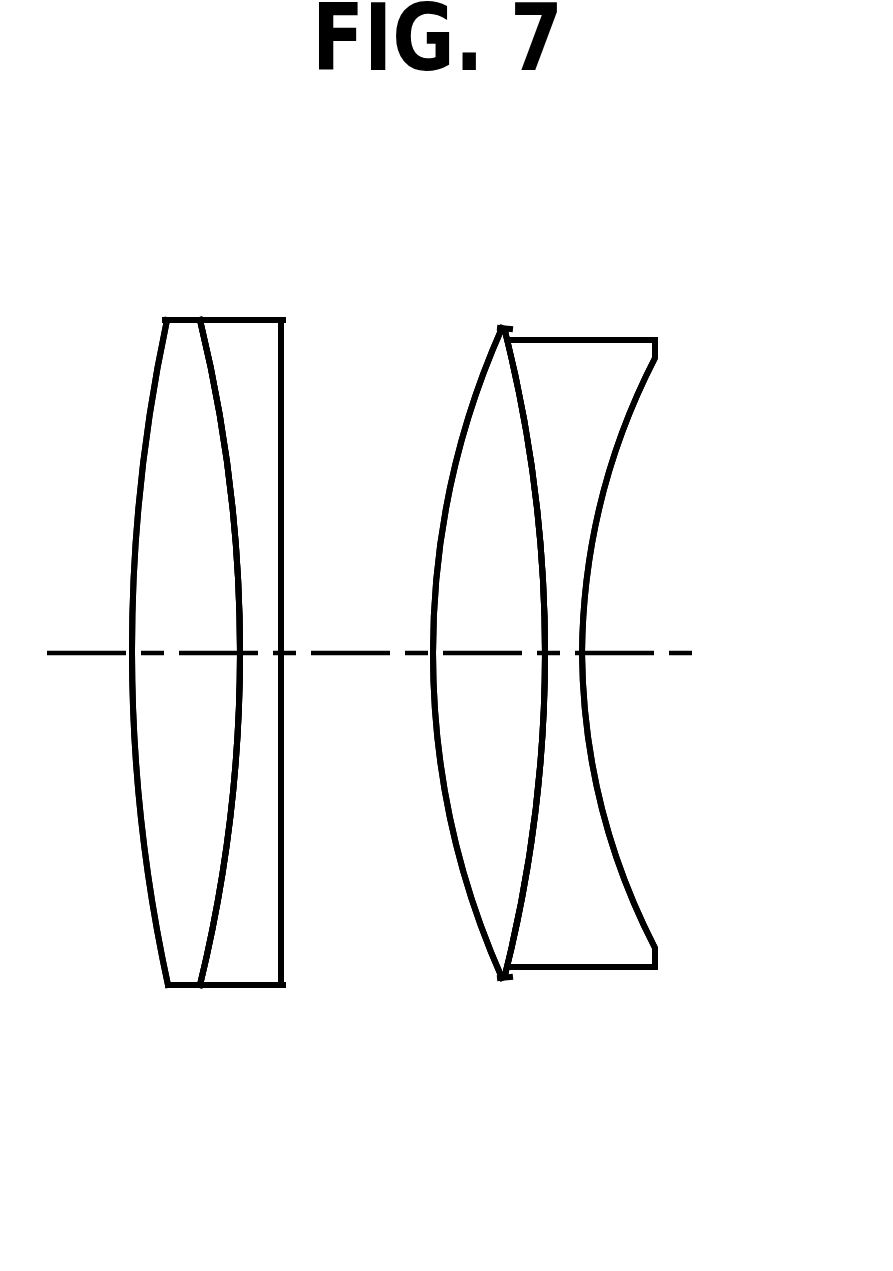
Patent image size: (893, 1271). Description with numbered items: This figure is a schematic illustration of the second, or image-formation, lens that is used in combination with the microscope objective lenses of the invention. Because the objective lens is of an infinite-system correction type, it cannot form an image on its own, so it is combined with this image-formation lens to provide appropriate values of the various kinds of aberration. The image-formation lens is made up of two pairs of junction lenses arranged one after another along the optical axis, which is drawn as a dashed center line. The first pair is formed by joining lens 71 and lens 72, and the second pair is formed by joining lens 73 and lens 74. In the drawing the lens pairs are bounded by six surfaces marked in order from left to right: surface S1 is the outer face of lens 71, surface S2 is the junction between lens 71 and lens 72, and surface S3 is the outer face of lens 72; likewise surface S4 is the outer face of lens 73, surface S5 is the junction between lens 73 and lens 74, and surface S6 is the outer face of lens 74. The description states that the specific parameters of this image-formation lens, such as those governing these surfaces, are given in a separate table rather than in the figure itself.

The lens 71 is at (177, 320).
The lens 72 is at (238, 318).
The lens 73 is at (505, 327).
The lens 74 is at (638, 338).
The first lens surface S1 is at (156, 937).
The second lens surface S2 is at (208, 958).
The third lens surface S3 is at (283, 955).
The fourth lens surface S4 is at (480, 937).
The fifth lens surface S5 is at (527, 927).
The sixth lens surface S6 is at (648, 912).